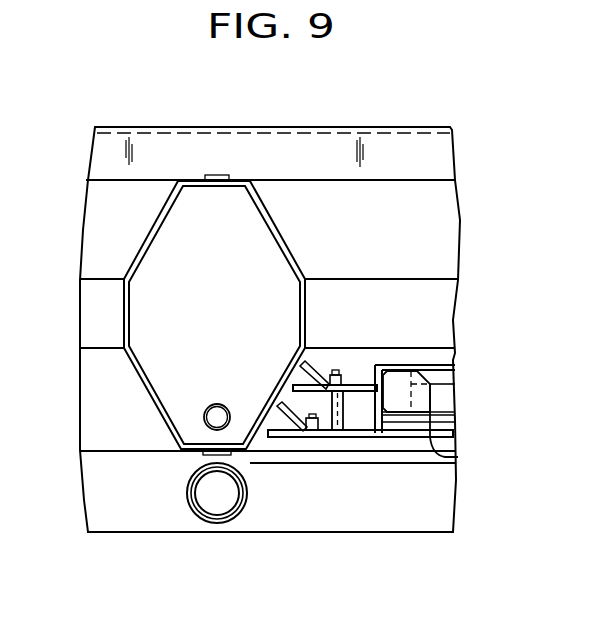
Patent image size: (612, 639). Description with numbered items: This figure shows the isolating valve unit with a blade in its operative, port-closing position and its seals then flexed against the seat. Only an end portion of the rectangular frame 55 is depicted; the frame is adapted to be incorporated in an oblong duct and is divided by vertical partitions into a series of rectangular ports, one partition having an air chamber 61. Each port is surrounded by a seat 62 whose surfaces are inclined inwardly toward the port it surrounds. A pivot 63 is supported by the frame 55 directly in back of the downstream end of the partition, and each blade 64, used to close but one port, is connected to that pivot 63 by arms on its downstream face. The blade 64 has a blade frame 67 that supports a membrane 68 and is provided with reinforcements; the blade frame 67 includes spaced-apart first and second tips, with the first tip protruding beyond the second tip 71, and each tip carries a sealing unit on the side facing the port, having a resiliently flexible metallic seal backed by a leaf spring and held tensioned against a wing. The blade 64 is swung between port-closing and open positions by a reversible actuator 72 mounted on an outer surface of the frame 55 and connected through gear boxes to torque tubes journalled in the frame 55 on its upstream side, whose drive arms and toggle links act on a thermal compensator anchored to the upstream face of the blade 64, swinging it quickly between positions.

The frame 55 is at (138, 128).
The air chamber 61 is at (157, 322).
The seat 62 is at (266, 434).
The pivot 63 is at (195, 507).
The blade 64 is at (438, 367).
The blade frame 67 is at (398, 368).
The membrane 68 is at (458, 457).
The second tip 71 is at (342, 438).
The reversible actuator 72 is at (358, 385).